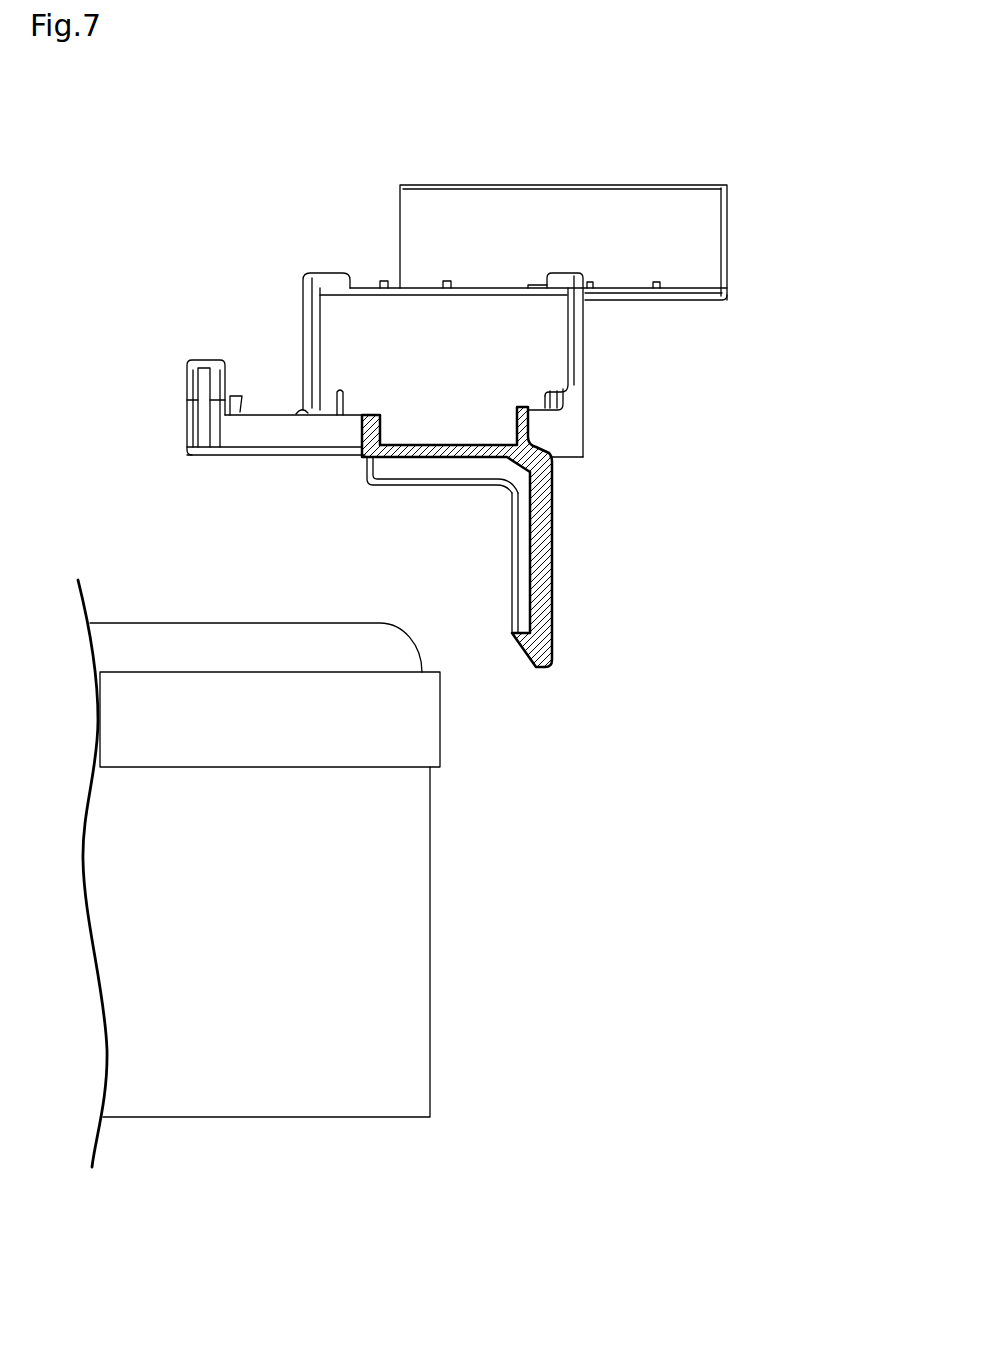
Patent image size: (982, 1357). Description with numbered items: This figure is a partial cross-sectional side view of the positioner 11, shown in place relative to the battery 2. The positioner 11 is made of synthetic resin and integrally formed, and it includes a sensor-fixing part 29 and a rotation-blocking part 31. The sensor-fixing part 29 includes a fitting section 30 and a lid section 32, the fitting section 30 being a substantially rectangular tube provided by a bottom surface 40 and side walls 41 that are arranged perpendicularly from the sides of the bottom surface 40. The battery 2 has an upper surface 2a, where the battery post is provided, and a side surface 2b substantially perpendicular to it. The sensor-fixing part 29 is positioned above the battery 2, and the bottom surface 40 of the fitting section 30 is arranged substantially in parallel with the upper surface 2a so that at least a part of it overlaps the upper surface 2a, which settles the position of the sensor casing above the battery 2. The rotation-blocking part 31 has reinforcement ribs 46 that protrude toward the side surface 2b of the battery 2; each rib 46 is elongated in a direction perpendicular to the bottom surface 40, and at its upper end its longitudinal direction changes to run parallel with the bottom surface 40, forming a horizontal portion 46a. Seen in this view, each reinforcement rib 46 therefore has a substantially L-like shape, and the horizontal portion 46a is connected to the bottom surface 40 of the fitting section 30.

The battery 2 is at (483, 808).
The upper surface 2a is at (207, 622).
The side surface 2b is at (440, 720).
The positioner 11 is at (200, 152).
The sensor-fixing part 29 is at (308, 237).
The fitting section 30 is at (253, 337).
The rotation-blocking part 31 is at (551, 560).
The lid section 32 is at (575, 160).
The bottom surface 40 is at (422, 443).
The side walls 41 is at (367, 414).
The reinforcement ribs 46 is at (507, 543).
The horizontal portion 46a is at (430, 478).